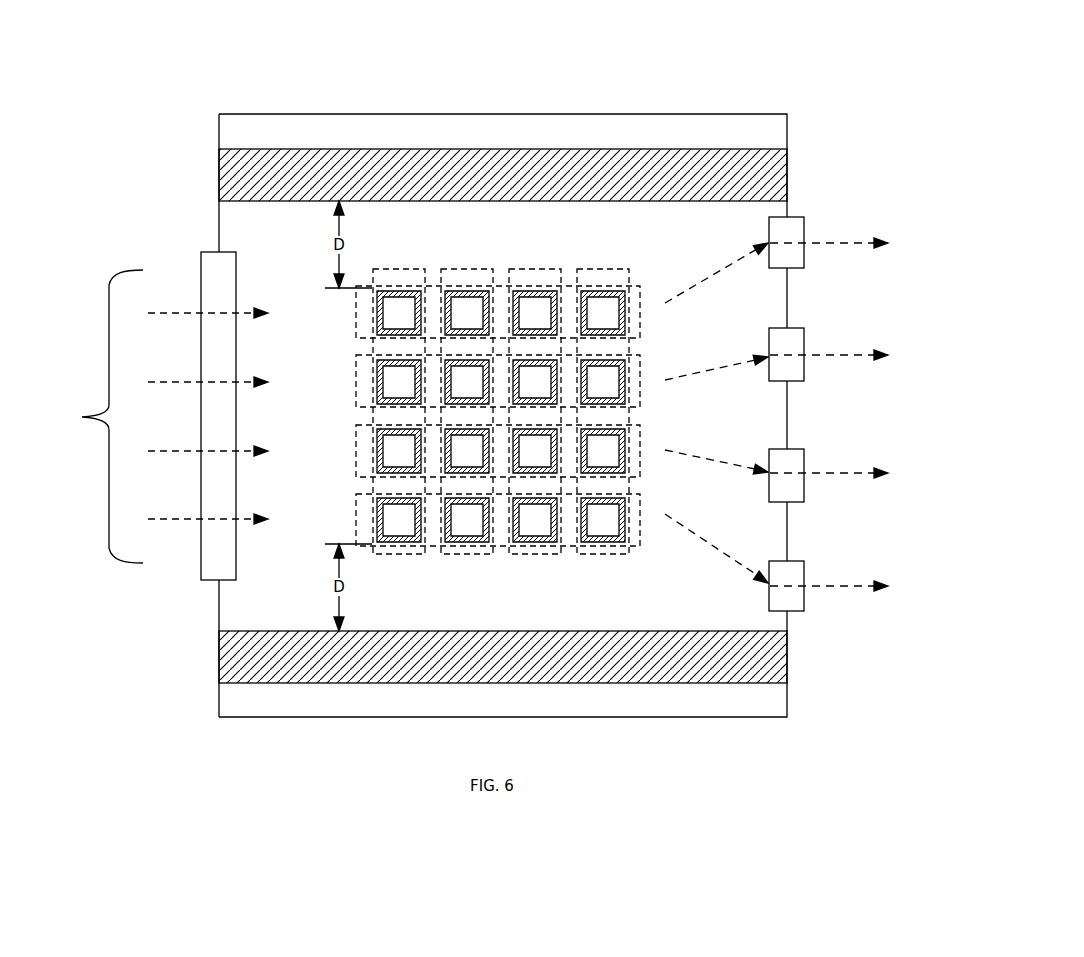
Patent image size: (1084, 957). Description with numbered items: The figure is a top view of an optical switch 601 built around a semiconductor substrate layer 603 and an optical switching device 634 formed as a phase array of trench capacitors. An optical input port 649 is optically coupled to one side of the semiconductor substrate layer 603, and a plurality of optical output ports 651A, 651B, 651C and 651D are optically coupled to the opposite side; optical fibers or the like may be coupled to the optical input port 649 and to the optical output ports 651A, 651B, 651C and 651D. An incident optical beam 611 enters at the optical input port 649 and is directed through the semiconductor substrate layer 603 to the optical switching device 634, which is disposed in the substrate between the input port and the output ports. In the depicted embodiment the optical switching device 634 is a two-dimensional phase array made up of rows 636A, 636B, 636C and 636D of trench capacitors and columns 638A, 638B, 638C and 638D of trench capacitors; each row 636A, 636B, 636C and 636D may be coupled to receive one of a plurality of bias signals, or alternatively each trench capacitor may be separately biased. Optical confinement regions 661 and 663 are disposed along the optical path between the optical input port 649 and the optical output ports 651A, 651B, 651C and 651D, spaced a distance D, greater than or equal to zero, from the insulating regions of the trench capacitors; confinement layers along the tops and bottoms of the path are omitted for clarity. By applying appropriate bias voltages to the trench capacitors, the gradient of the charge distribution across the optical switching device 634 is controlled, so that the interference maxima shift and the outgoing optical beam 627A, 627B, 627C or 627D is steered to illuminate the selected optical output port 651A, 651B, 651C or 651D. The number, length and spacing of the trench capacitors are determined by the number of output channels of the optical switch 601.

The optical switch 601 is at (735, 76).
The semiconductor substrate layer 603 is at (219, 616).
The optical beam 611 is at (82, 417).
The optical input port 649 is at (207, 252).
The optical confinement region 661 is at (219, 178).
The optical confinement region 663 is at (219, 661).
The optical switching device 634 is at (637, 249).
The row of trench capacitors 636A is at (355, 318).
The row of trench capacitors 636B is at (356, 350).
The row of trench capacitors 636C is at (356, 450).
The row of trench capacitors 636D is at (356, 517).
The column of trench capacitors 638A is at (395, 268).
The column of trench capacitors 638B is at (464, 268).
The column of trench capacitors 638C is at (533, 268).
The column of trench capacitors 638D is at (603, 268).
The optical output port 651A is at (793, 217).
The optical output port 651B is at (793, 328).
The optical output port 651C is at (793, 449).
The optical output port 651D is at (793, 561).
The outgoing optical beam 627A is at (853, 245).
The outgoing optical beam 627B is at (853, 358).
The outgoing optical beam 627C is at (853, 476).
The outgoing optical beam 627D is at (853, 588).